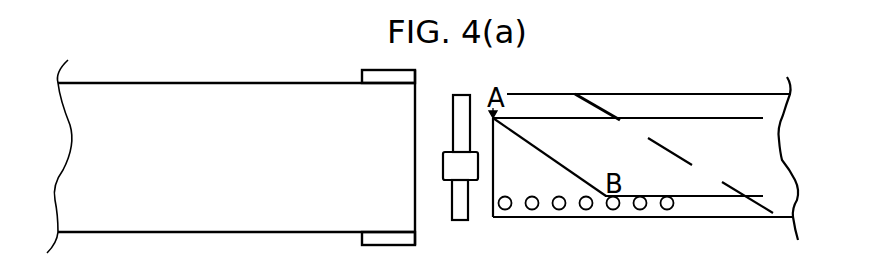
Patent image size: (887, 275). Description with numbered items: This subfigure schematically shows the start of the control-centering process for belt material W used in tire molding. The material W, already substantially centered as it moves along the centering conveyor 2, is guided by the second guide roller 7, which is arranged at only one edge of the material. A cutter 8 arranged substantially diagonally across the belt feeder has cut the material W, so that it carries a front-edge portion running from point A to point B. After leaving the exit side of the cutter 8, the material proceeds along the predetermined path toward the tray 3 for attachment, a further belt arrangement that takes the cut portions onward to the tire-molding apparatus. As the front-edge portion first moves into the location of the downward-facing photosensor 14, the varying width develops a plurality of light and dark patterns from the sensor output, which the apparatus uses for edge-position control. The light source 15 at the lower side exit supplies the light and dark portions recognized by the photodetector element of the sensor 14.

The centering conveyor 2 is at (693, 93).
The tray for attachment 3 is at (203, 83).
The second guide roller 7 is at (565, 206).
The cutter 8 is at (602, 110).
The photosensor 14 is at (472, 172).
The light source 15 is at (463, 95).
The material W is at (557, 127).